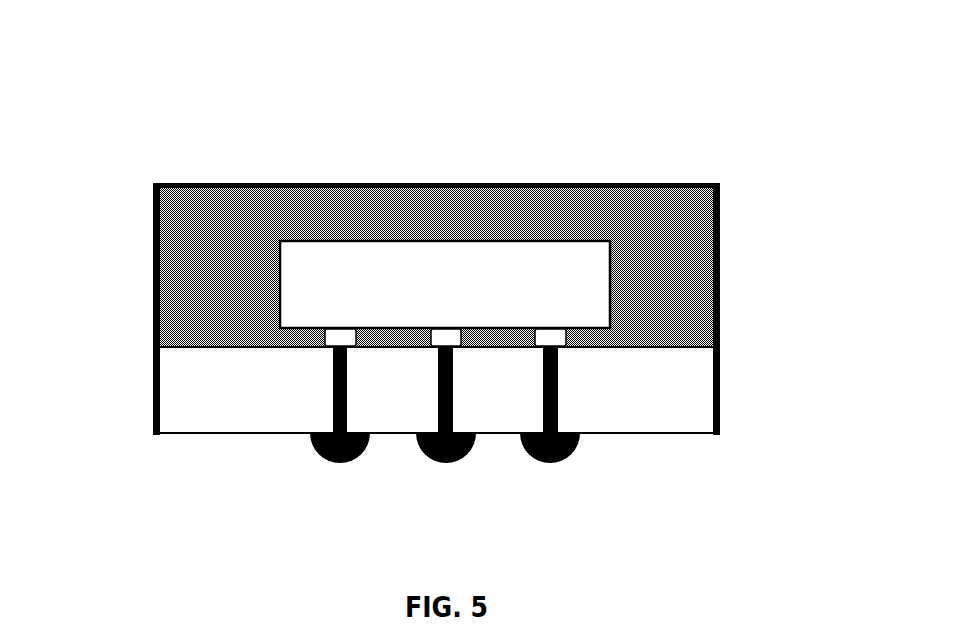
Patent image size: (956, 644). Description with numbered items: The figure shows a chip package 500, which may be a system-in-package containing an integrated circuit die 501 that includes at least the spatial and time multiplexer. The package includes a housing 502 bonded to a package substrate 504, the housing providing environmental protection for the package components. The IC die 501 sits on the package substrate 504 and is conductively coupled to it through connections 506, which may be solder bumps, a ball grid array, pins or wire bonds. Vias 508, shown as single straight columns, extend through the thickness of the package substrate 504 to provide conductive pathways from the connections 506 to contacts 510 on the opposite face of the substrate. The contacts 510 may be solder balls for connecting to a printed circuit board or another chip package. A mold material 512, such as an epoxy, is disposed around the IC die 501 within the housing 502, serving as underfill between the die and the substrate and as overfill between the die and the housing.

The chip package 500 is at (112, 59).
The integrated circuit die 501 is at (473, 298).
The housing 502 is at (720, 200).
The package substrate 504 is at (658, 406).
The connections 506 is at (567, 337).
The vias 508 is at (558, 373).
The contacts 510 is at (577, 444).
The mold material 512 is at (226, 203).